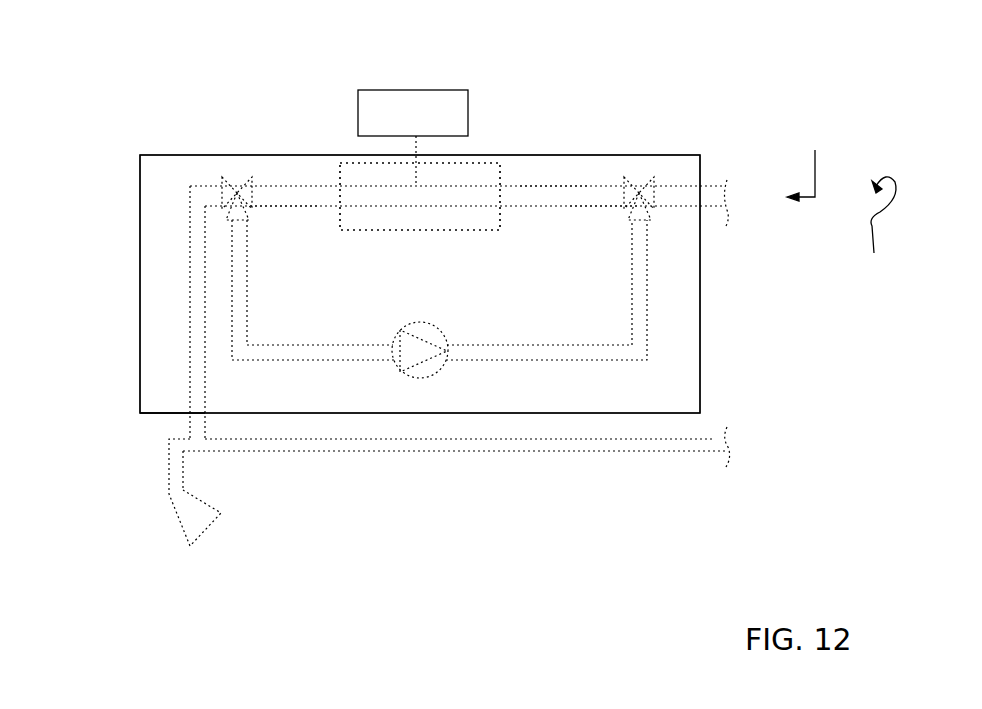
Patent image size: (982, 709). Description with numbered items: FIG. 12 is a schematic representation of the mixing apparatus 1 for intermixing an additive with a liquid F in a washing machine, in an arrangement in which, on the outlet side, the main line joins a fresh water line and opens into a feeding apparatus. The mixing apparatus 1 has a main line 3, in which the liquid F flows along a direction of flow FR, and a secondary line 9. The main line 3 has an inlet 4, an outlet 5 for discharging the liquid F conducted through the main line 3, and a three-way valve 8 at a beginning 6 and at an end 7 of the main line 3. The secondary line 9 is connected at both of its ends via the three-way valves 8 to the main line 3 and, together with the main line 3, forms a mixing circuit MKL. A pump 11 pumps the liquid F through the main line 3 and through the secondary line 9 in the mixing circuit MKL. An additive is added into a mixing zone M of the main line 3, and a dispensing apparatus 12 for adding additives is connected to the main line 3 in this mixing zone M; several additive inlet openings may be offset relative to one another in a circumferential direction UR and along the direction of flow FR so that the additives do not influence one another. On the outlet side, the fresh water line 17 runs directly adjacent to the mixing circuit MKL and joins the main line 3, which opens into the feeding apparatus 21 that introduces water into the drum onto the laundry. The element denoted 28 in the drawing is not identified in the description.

The mixing apparatus 1 is at (104, 105).
The main line 3 is at (305, 186).
The inlet 4 is at (742, 190).
The outlet 5 is at (173, 424).
The beginning 6 is at (604, 225).
The end 7 is at (278, 222).
The three-way valve 8 is at (237, 166).
The secondary line 9 is at (237, 307).
The pump 11 is at (428, 380).
The dispensing apparatus 12 is at (424, 93).
The fresh water line 17 is at (711, 436).
The feeding apparatus 21 is at (138, 516).
The motor housing 28 is at (431, 177).
The mixing zone M is at (500, 180).
The liquid F is at (553, 207).
The direction of flow FR is at (807, 159).
The circumferential direction UR is at (874, 235).
The mixing circuit MKL is at (692, 328).